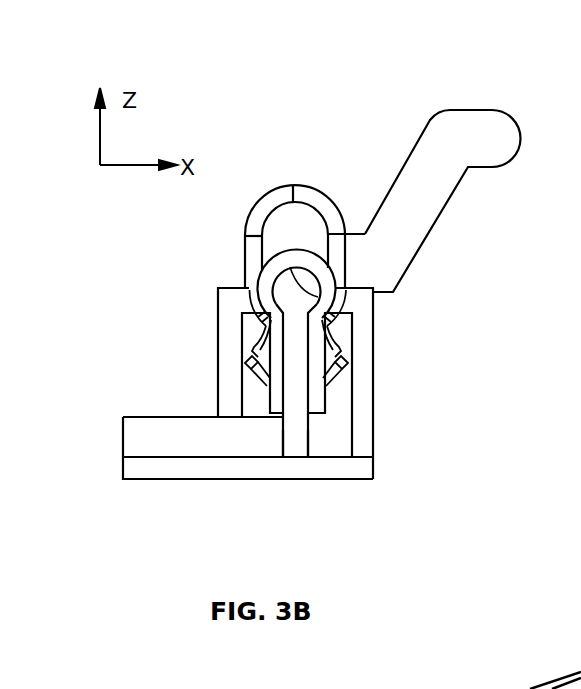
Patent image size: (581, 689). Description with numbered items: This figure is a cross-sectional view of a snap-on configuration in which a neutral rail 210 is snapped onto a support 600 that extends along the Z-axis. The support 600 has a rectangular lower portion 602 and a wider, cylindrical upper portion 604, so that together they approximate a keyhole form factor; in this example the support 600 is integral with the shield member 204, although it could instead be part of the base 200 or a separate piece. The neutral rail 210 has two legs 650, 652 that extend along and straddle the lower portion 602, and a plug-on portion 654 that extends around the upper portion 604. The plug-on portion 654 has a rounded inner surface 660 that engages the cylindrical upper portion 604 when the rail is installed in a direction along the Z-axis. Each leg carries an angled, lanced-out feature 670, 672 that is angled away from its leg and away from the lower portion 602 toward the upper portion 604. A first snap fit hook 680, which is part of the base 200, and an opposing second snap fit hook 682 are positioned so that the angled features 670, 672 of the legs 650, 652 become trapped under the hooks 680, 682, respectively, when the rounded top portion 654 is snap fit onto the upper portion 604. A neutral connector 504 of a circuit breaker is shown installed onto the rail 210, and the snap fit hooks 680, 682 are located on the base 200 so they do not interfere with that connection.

The neutral connector 504 is at (503, 142).
The neutral rail 210 is at (271, 270).
The upper portion 604 is at (297, 297).
The rounded inner surface 660 is at (318, 297).
The plug-on portion 654 is at (330, 281).
The first lanced out feature 670 is at (250, 365).
The angled feature 672 is at (343, 357).
The leg 652 is at (313, 397).
The leg 650 is at (280, 387).
The first snap fit hook 680 is at (228, 397).
The second snap fit hook 682 is at (365, 396).
The base 200 is at (412, 383).
The shield member 204 is at (138, 443).
The lower portion 602 is at (298, 420).
The support 600 is at (297, 438).